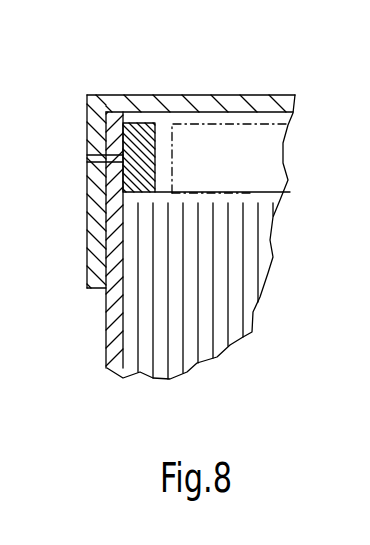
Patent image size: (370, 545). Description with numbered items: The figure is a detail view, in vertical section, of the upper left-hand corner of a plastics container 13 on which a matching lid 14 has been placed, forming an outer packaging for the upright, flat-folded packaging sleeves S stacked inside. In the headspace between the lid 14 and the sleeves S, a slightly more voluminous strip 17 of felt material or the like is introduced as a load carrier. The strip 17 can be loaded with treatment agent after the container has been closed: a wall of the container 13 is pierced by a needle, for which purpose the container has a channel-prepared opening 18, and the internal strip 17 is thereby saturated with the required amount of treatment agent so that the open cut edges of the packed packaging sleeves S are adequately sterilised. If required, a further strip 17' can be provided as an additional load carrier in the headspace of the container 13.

The plastics container 13 is at (117, 325).
The lid 14 is at (255, 103).
The strip 17 is at (199, 110).
The further strip 17' is at (229, 111).
The channel-prepared opening 18 is at (88, 144).
The packaging sleeves S is at (197, 330).